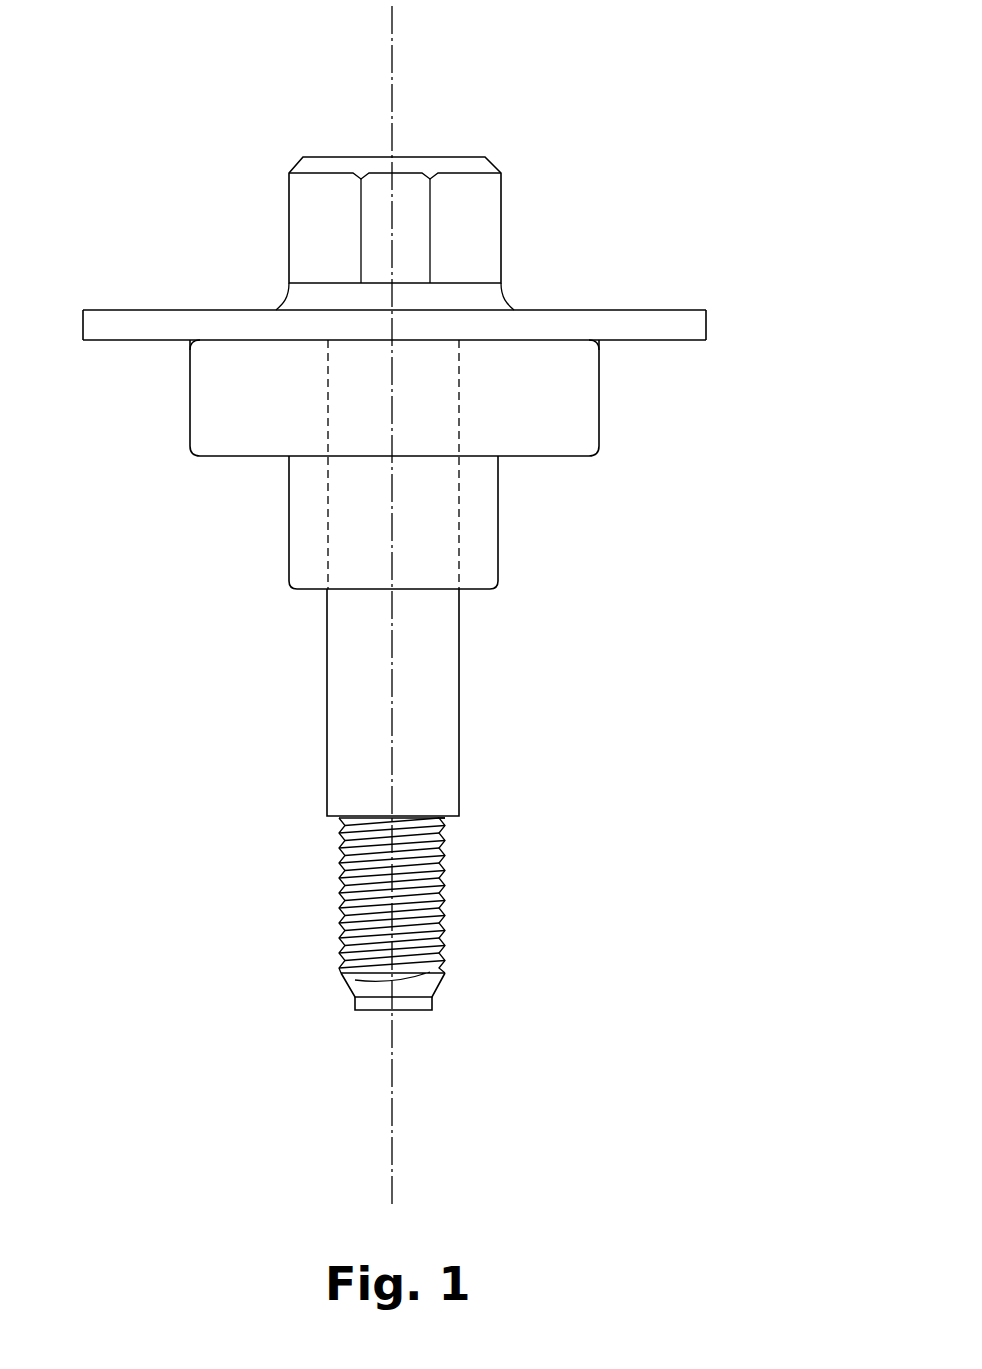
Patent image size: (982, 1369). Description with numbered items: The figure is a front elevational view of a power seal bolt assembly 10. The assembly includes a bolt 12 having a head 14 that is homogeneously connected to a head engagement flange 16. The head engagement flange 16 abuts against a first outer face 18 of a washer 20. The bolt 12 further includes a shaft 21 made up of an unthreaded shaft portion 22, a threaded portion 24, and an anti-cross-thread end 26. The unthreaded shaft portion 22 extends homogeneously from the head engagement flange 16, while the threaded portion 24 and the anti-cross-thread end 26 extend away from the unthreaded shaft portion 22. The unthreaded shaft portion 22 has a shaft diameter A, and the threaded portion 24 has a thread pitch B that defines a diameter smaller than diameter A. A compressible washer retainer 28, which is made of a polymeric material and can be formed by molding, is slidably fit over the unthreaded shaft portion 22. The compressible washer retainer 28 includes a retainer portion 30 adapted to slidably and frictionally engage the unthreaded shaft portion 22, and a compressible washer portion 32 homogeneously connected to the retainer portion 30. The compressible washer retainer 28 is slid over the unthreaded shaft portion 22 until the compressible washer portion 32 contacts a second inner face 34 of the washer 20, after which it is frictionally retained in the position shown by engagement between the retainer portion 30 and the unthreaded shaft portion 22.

The power seal bolt assembly 10 is at (758, 363).
The bolt 12 is at (530, 195).
The head 14 is at (298, 208).
The head engagement flange 16 is at (288, 297).
The first outer face 18 is at (112, 307).
The washer 20 is at (640, 317).
The second inner face 34 is at (132, 347).
The compressible washer retainer 28 is at (580, 467).
The compressible washer portion 32 is at (242, 443).
The retainer portion 30 is at (300, 568).
The shaft 21 is at (480, 623).
The unthreaded shaft portion 22 is at (447, 700).
The threaded portion 24 is at (448, 885).
The anti-cross-thread end 26 is at (428, 1002).